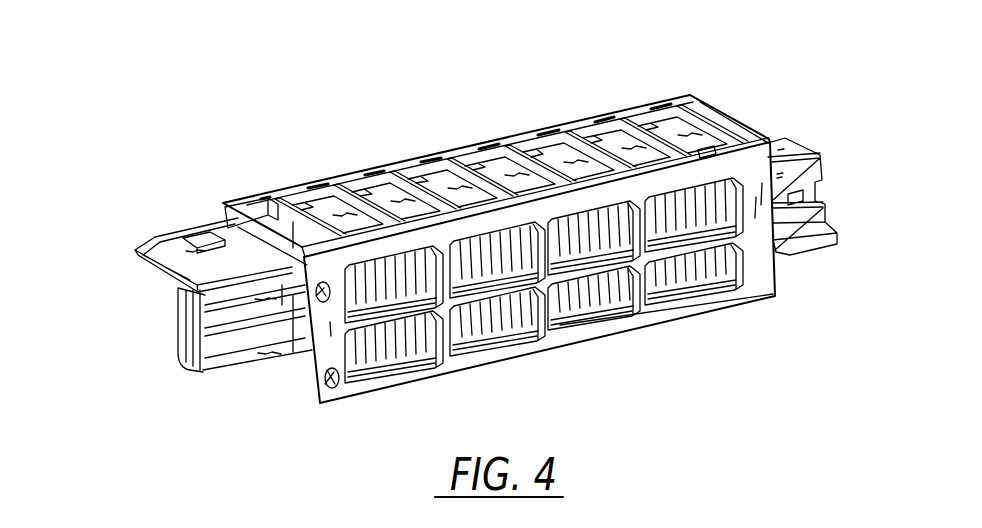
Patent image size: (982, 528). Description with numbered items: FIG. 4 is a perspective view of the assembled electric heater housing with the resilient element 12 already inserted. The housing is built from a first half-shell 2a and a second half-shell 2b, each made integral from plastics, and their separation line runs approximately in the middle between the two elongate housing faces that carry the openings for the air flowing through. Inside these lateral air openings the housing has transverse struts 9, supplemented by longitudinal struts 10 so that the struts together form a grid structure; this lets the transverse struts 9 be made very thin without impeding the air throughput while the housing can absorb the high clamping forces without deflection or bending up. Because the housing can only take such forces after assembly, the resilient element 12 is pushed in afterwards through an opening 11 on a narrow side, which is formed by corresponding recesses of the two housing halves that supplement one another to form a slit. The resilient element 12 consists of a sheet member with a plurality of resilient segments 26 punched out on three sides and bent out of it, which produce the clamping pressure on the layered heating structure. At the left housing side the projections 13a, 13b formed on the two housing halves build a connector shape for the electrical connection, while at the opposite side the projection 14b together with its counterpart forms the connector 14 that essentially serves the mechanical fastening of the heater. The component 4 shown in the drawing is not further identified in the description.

The first half-shell 2a is at (693, 102).
The second half-shell 2b is at (765, 140).
The resilient segments 26 is at (170, 240).
The connector 14 is at (797, 140).
The projection 14b is at (810, 243).
The opening (slit) 11 is at (230, 225).
The resilient element 12 is at (137, 248).
The projection 13a is at (177, 347).
The projection 13b is at (218, 370).
The longitudinal struts 10 is at (498, 290).
The transverse struts 9 is at (630, 275).
The housing 4 is at (700, 300).